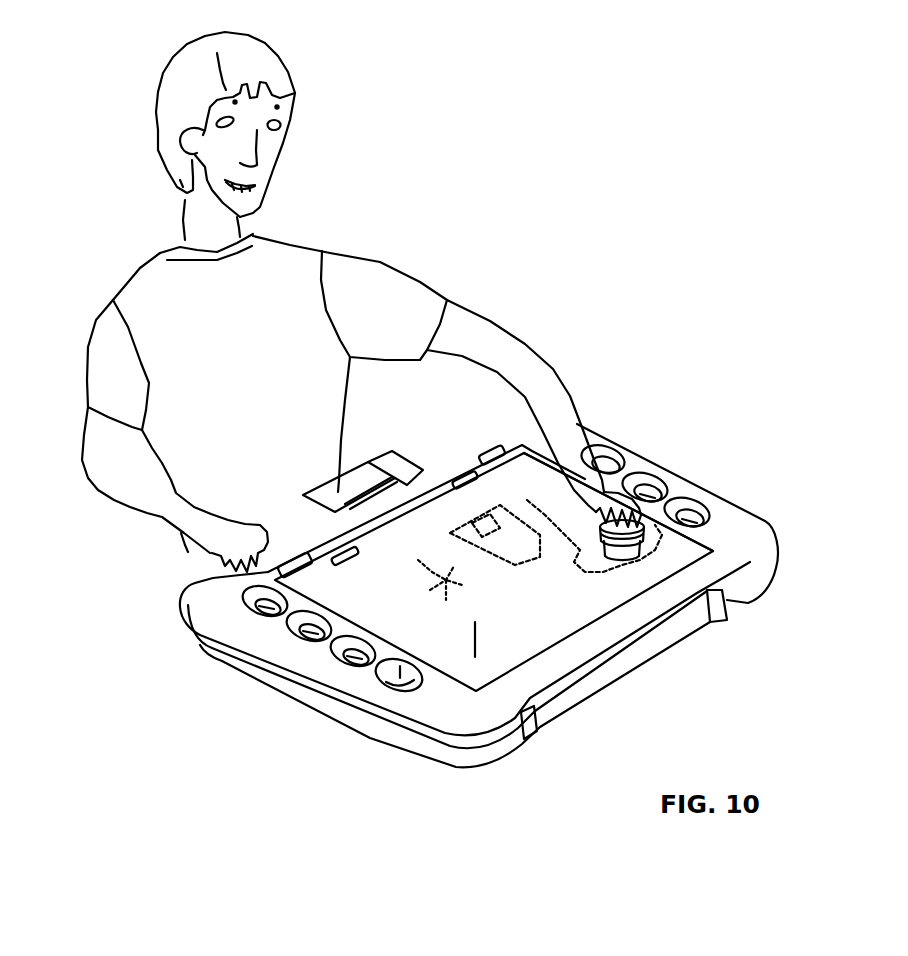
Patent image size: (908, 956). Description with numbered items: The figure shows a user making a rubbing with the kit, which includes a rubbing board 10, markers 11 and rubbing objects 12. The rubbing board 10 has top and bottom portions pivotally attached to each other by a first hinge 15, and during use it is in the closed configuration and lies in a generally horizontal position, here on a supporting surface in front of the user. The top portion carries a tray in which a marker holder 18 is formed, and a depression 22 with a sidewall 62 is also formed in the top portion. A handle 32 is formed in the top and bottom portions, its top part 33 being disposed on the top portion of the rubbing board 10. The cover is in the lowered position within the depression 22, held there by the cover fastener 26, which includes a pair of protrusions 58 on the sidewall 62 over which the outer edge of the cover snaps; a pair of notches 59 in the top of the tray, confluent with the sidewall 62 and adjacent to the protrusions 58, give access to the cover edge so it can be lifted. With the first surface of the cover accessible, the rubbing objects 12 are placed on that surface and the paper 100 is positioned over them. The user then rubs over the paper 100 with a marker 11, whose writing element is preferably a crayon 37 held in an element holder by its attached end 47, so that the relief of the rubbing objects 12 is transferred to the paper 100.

The rubbing board 10 is at (645, 459).
The marker 11 is at (635, 567).
The rubbing object 12 is at (446, 602).
The first hinge 15 is at (528, 735).
The marker holder 18 is at (383, 683).
The depression 22 is at (475, 622).
The cover fastener 26 is at (420, 569).
The handle 32 is at (376, 475).
The top part 33 is at (337, 497).
The crayon 37 is at (632, 549).
The attached end 47 is at (440, 488).
The protrusion 58 is at (335, 558).
The notch 59 is at (293, 557).
The sidewall 62 is at (697, 541).
The paper 100 is at (382, 600).